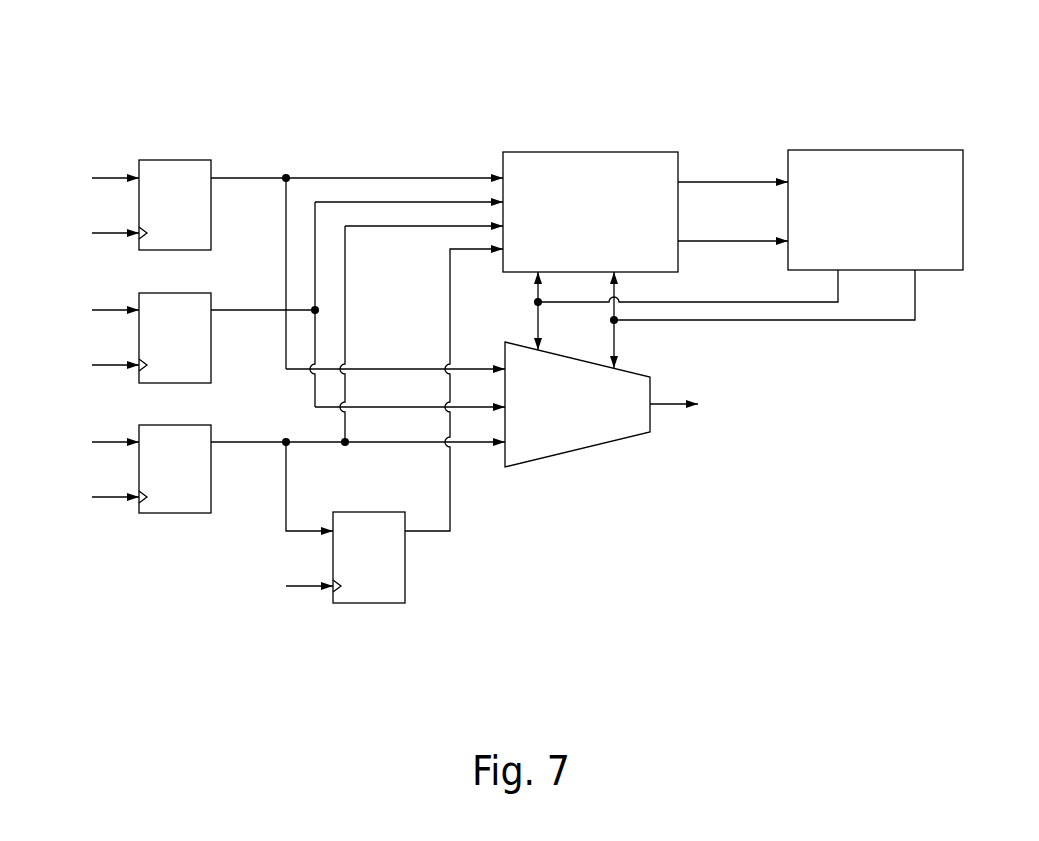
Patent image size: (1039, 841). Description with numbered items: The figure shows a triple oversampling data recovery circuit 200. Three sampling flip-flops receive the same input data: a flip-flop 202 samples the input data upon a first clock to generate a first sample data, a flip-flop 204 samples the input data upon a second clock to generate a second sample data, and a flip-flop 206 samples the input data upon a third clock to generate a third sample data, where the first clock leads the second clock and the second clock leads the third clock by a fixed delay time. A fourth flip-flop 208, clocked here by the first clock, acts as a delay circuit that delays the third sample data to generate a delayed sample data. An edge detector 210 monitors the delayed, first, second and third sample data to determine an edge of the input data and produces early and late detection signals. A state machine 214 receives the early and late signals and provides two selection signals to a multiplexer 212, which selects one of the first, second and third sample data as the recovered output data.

The triple oversampling data recovery circuit 200 is at (974, 64).
The flip-flop 202 is at (176, 160).
The flip-flop 204 is at (195, 293).
The flip-flop 206 is at (195, 425).
The flip-flop 208 is at (370, 512).
The edge detector 210 is at (585, 152).
The multiplexer 212 is at (578, 447).
The state machine 214 is at (871, 150).